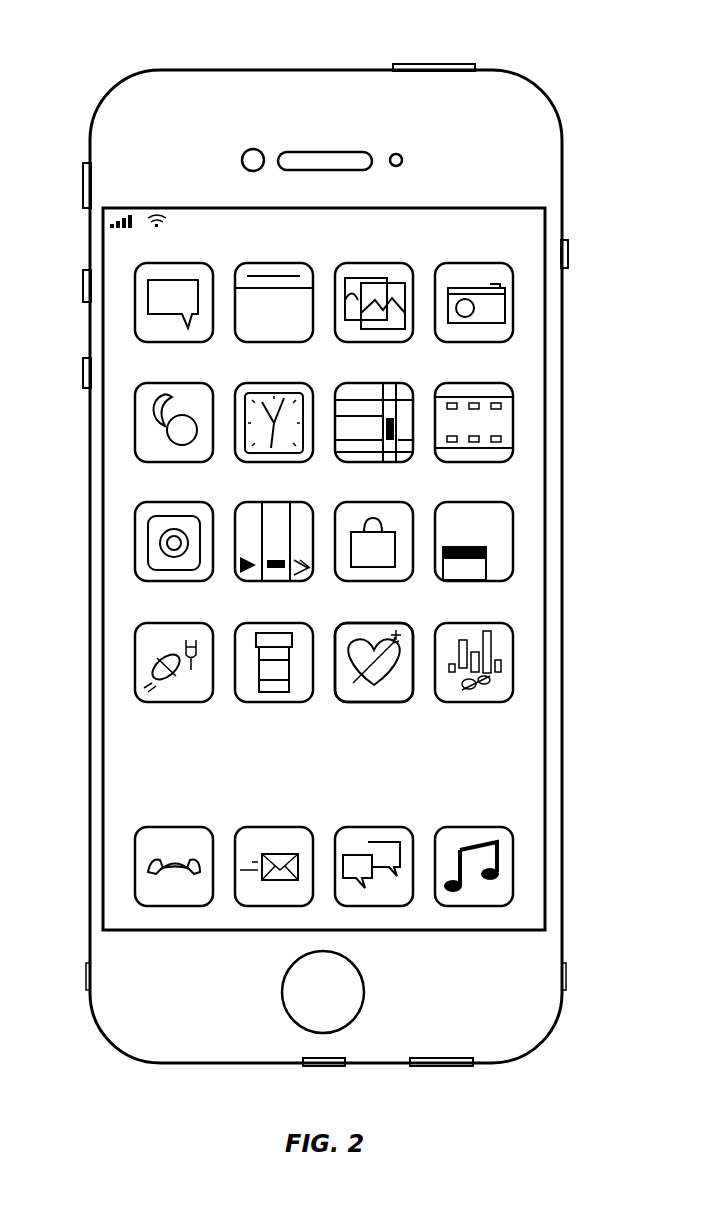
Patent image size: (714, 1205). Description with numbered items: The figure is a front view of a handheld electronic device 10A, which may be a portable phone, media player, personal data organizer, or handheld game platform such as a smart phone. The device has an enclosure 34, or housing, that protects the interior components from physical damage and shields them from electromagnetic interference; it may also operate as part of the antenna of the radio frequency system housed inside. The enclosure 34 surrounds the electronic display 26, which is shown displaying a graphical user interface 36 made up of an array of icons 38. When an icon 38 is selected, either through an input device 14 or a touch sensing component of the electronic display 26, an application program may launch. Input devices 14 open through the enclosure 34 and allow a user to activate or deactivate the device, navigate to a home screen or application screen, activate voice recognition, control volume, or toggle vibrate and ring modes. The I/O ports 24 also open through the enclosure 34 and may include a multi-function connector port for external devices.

The handheld electronic device 10A is at (96, 66).
The input devices 14 is at (433, 64).
The enclosure 34 is at (563, 162).
The electronic display 26 is at (547, 617).
The graphical user interface 36 is at (535, 484).
The icon 38 is at (373, 703).
The I/O ports 24 is at (178, 1066).